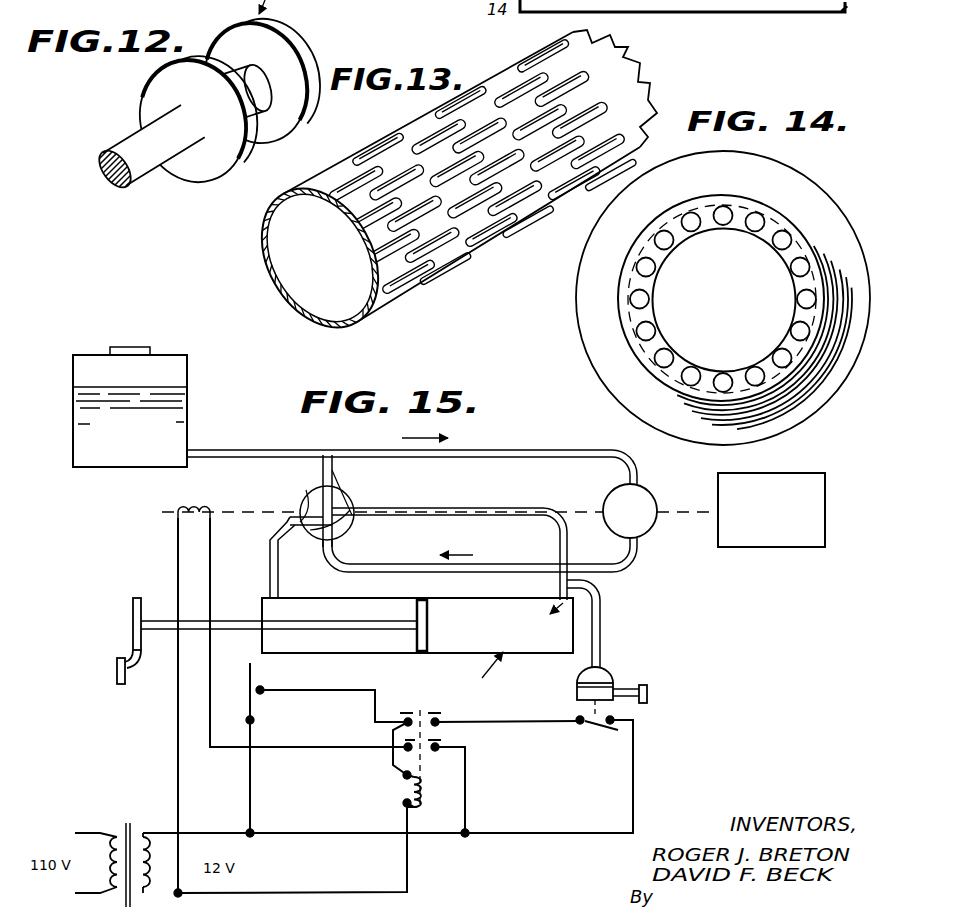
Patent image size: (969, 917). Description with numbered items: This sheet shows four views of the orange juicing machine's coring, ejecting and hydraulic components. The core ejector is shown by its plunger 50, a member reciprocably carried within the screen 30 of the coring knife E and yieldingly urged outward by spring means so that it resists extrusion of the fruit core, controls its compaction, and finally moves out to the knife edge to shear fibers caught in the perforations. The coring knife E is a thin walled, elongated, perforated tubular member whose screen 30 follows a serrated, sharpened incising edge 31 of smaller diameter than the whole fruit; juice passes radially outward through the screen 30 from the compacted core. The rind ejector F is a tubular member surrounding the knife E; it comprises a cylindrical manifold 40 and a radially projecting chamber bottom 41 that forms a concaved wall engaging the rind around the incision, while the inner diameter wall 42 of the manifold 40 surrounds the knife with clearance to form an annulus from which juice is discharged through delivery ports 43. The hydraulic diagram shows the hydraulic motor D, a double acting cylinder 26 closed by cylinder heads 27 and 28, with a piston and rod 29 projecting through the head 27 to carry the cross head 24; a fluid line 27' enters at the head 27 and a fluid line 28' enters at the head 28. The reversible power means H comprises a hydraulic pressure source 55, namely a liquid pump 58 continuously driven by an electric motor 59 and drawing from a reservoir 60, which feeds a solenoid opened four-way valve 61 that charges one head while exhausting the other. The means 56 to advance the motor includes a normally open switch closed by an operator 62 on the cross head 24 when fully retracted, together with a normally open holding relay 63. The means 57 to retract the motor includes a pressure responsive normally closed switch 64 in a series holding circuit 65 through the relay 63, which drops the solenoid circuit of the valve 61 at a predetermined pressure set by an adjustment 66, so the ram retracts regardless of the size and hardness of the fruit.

In FIG. 12, the plunger 50 is at (295, 50).
In FIG. 13, the screen 30 is at (478, 208).
In FIG. 13, the sharpened incising edge 31 is at (640, 63).
In FIG. 13, the coring knife E is at (258, 229).
In FIG. 14, the cylindrical manifold 40 is at (614, 275).
In FIG. 14, the chamber bottom 41 is at (617, 228).
In FIG. 14, the inner diameter wall 42 is at (655, 250).
In FIG. 14, the delivery ports 43 is at (638, 300).
In FIG. 14, the rind ejector F is at (866, 174).
In FIG. 15, the reservoir 60 is at (130, 407).
In FIG. 15, the solenoid opened valve 61 is at (340, 498).
In FIG. 15, the liquid pump 58 is at (642, 495).
In FIG. 15, the electric motor 59 is at (812, 490).
In FIG. 15, the hydraulic pressure source 55 is at (732, 552).
In FIG. 15, the fluid line 28' is at (449, 540).
In FIG. 15, the fluid line 27' is at (258, 557).
In FIG. 15, the cylinder head 28 is at (597, 623).
In FIG. 15, the cylinder head 27 is at (242, 614).
In FIG. 15, the cylinder 26 is at (385, 655).
In FIG. 15, the cross head 24 is at (133, 613).
In FIG. 15, the piston and rod 29 is at (160, 633).
In FIG. 15, the operator 62 is at (125, 685).
In FIG. 15, the means to advance the motor 56 is at (225, 714).
In FIG. 15, the holding relay 63 is at (433, 757).
In FIG. 15, the series holding circuit 65 is at (392, 766).
In FIG. 15, the pressure responsive normally closed switch 64 is at (598, 732).
In FIG. 15, the reversible power means H is at (622, 669).
In FIG. 15, the means to retract the motor 57 is at (660, 692).
In FIG. 15, the adjustment 66 is at (647, 702).
In FIG. 15, the hydraulic motor D is at (489, 680).